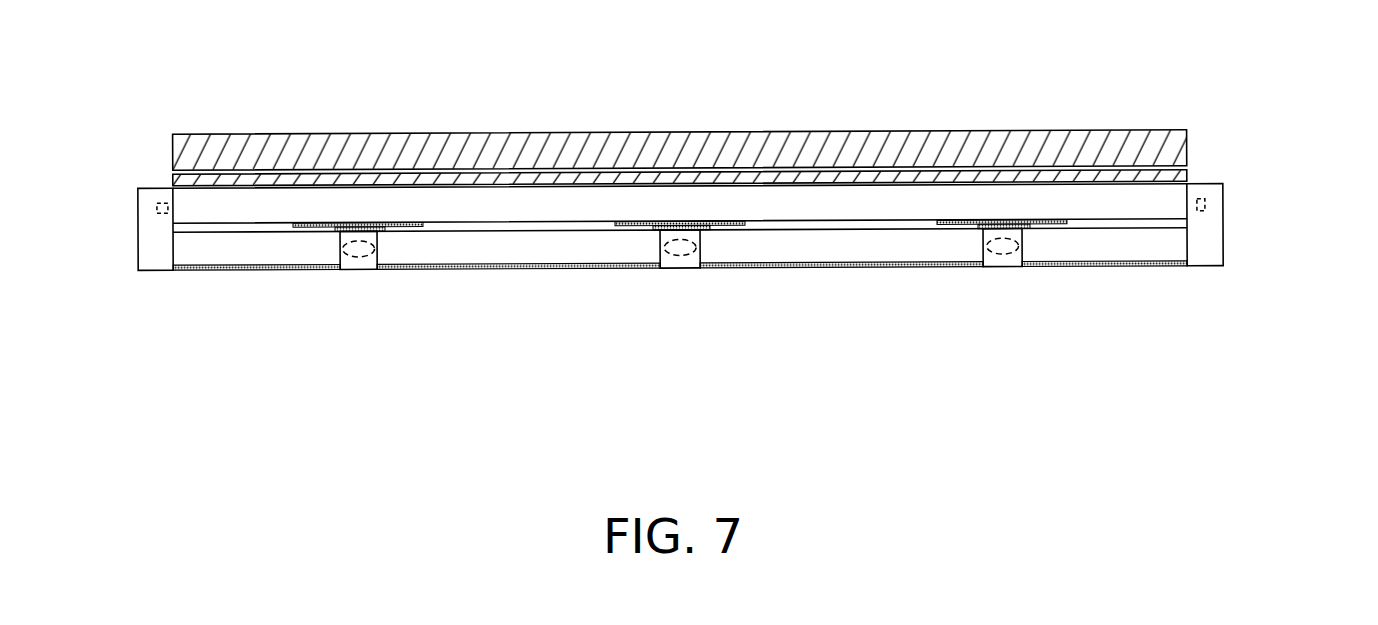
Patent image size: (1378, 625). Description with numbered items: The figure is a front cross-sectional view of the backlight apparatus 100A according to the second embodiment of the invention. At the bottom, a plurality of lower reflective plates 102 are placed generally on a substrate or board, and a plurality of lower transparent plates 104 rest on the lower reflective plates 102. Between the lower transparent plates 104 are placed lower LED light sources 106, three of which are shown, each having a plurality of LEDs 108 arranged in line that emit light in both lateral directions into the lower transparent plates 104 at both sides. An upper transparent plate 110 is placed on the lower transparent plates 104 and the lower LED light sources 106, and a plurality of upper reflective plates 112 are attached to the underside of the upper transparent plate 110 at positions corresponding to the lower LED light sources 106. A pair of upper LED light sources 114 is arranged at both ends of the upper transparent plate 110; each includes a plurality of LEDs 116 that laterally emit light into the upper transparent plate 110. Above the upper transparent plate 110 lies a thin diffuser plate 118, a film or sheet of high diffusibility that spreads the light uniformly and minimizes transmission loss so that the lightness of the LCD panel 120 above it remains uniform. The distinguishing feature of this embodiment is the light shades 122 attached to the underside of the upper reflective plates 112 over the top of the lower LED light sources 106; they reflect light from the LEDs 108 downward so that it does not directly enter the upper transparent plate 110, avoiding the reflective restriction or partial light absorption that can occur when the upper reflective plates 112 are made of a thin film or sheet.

The backlight apparatus 100A is at (633, 58).
The lower reflective plate 102 is at (460, 270).
The lower transparent plate 104 is at (545, 248).
The lower LED light source 106 is at (663, 262).
The LED 108 is at (690, 255).
The upper transparent plate 110 is at (1098, 203).
The upper reflective plate 112 is at (945, 223).
The upper LED light source 114 is at (148, 252).
The LED 116 is at (157, 206).
The diffuser plate 118 is at (173, 177).
The LCD panel 120 is at (200, 140).
The light shade 122 is at (1030, 224).